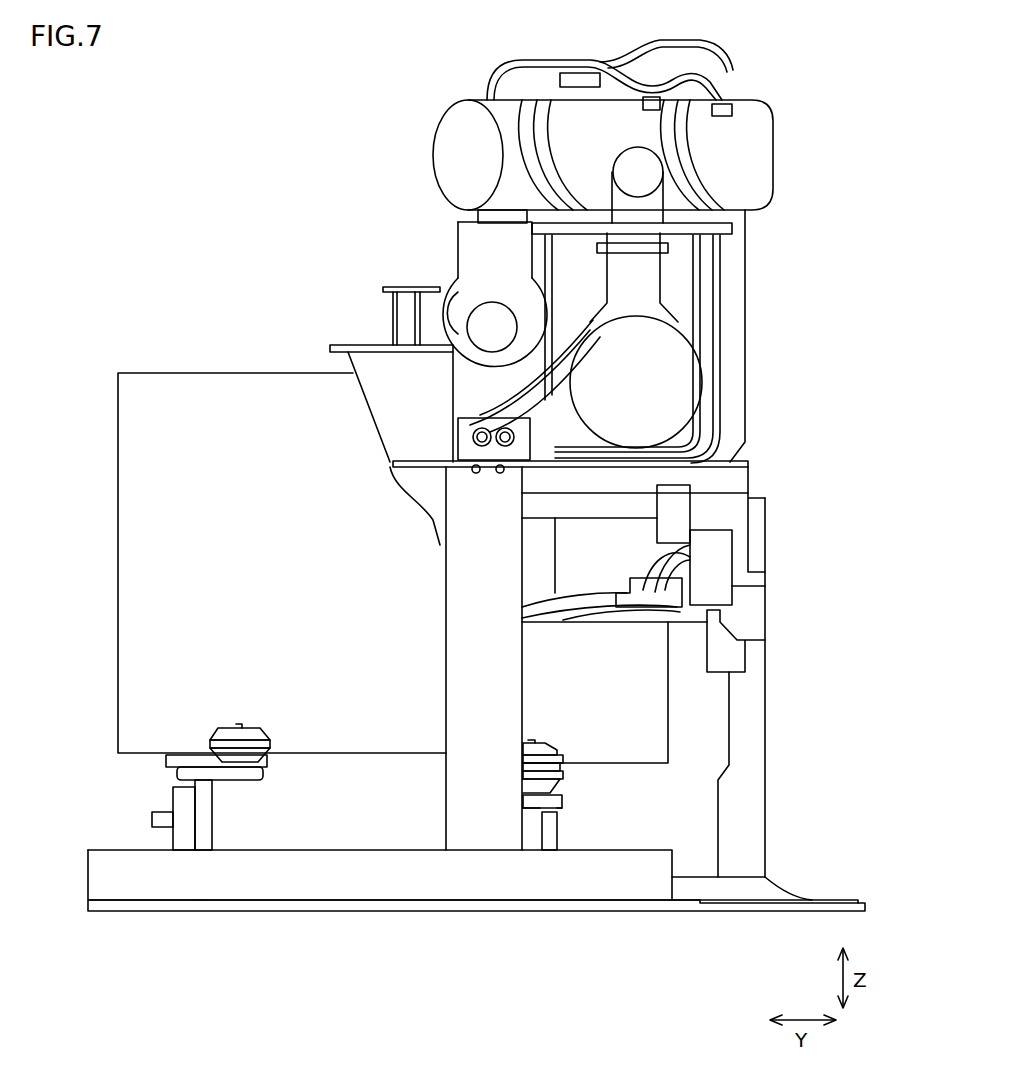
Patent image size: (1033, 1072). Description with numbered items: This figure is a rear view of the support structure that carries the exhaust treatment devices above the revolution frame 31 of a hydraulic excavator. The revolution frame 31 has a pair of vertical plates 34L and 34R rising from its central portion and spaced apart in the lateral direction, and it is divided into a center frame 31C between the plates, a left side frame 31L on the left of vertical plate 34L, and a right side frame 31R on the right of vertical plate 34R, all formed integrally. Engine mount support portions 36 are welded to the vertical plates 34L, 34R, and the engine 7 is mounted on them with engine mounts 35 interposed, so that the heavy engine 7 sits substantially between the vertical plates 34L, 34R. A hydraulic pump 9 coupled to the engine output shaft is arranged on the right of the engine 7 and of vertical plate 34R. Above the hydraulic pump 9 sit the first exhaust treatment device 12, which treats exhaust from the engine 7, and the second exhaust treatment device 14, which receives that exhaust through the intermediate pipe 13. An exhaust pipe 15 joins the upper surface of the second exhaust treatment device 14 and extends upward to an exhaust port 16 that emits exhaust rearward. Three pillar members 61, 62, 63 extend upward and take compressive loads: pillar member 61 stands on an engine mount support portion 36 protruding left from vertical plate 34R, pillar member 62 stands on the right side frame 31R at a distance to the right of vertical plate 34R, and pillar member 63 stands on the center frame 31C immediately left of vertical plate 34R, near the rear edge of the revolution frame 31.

The engine 7 is at (148, 562).
The hydraulic pump 9 is at (633, 730).
The first exhaust treatment device 12 is at (748, 138).
The intermediate pipe 13 is at (462, 295).
The second exhaust treatment device 14 is at (672, 382).
The exhaust pipe 15 is at (735, 232).
The exhaust port 16 is at (642, 176).
The revolution frame 31 is at (275, 872).
The left side frame 31L is at (128, 873).
The center frame 31C is at (340, 872).
The right side frame 31R is at (688, 890).
The vertical plate 34L is at (200, 835).
The vertical plate 34R is at (550, 838).
The engine mount 35 is at (240, 760).
The engine mount support portion 36 is at (222, 773).
The pillar member 61 is at (540, 553).
The pillar member 62 is at (750, 706).
The pillar member 63 is at (482, 800).